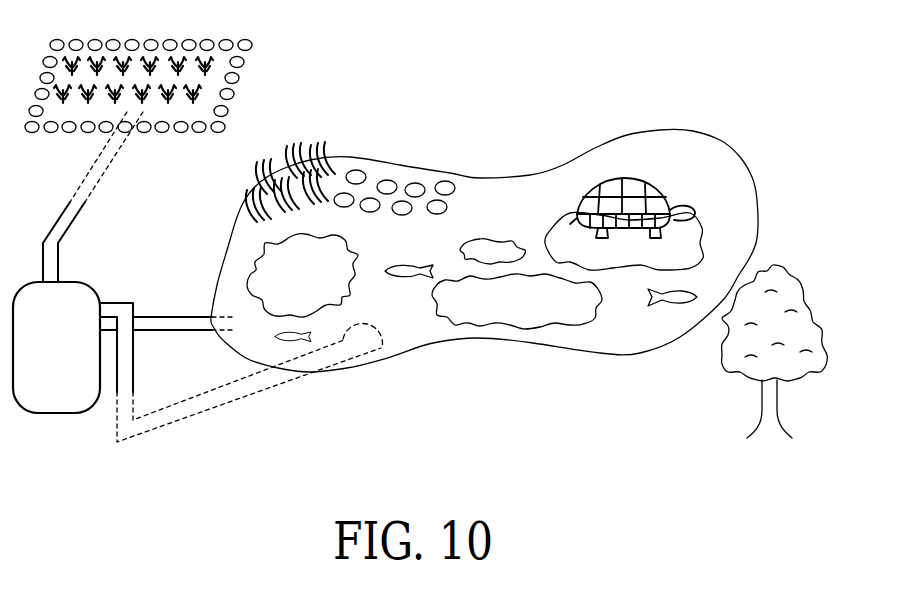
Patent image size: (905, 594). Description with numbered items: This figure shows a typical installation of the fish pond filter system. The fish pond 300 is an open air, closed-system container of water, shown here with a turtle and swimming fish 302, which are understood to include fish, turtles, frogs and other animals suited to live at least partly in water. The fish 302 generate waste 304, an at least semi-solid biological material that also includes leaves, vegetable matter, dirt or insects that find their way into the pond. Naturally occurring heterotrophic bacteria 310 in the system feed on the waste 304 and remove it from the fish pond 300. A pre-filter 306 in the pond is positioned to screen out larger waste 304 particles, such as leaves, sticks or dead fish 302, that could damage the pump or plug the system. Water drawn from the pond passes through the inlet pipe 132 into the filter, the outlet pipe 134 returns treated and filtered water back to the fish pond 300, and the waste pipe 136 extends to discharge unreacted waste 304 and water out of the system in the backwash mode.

The inlet pipe 132 is at (125, 362).
The outlet pipe 134 is at (165, 323).
The waste pipe 136 is at (50, 262).
The fish pond 300 is at (567, 182).
The fish 302 is at (696, 292).
The waste 304 is at (280, 255).
The pre-filter 306 is at (368, 343).
The heterotrophic bacteria 310 is at (527, 310).